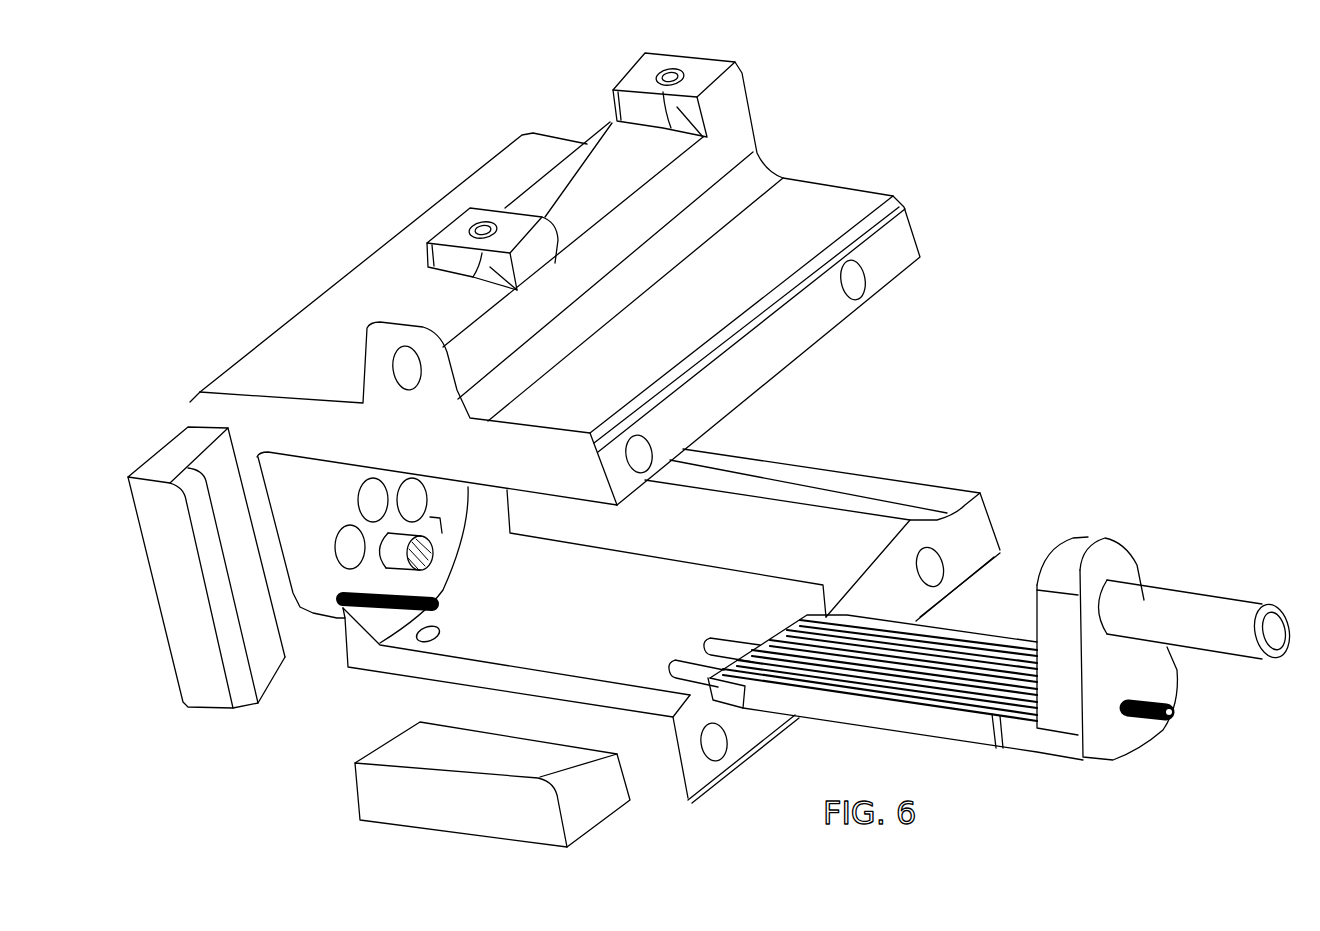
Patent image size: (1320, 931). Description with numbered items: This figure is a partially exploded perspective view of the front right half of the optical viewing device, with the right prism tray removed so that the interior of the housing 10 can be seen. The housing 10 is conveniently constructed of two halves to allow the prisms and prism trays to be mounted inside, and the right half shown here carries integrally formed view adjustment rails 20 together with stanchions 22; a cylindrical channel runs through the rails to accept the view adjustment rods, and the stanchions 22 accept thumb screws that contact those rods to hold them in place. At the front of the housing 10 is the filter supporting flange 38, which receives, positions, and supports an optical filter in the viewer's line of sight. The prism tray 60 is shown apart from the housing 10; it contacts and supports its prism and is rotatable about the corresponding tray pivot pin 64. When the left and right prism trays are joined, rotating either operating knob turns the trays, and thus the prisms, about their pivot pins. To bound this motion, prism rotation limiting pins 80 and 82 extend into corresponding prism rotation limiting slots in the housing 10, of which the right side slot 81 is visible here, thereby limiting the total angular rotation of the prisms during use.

The housing 10 is at (855, 168).
The view adjustment rail 20 is at (723, 147).
The stanchion 22 is at (700, 62).
The filter supporting flange 38 is at (200, 677).
The right prism tray 60 is at (953, 743).
The right tray pivot pin 64 is at (1215, 602).
The prism rotation limiting pin 80 is at (1147, 721).
The prism rotation limiting slot (right side) 81 is at (337, 596).
The prism rotation limiting pin 82 is at (440, 607).